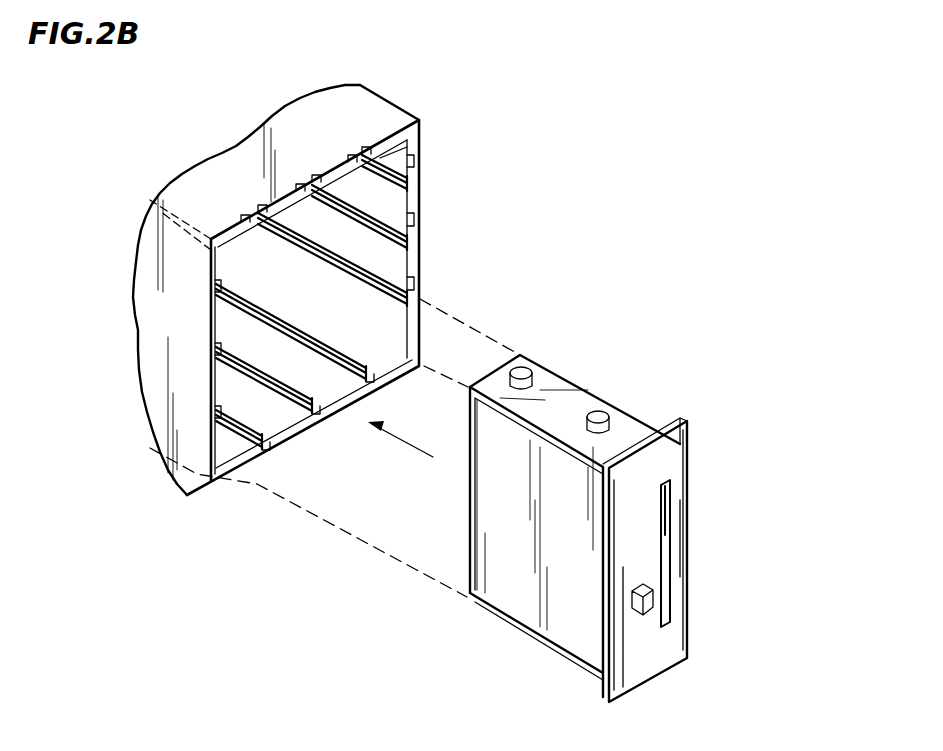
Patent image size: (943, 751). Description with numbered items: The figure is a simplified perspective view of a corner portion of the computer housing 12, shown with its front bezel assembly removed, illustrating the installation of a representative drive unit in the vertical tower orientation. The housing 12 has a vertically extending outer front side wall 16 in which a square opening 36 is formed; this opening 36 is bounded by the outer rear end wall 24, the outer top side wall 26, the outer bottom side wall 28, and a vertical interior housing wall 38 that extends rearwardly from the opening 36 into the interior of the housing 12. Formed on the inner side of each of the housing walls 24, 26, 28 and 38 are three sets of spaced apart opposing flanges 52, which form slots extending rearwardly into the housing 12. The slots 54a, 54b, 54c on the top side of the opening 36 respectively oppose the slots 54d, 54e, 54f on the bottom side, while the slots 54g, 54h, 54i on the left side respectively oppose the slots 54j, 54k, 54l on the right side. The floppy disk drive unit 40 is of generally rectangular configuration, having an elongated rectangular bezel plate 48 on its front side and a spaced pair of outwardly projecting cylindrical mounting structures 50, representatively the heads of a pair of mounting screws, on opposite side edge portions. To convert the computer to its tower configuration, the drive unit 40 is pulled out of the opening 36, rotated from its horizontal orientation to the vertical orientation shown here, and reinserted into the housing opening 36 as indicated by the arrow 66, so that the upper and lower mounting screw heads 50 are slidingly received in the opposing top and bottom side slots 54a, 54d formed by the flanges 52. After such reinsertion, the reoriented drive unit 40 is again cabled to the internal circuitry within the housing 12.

The housing 12 is at (316, 276).
The outer front side wall 16 is at (150, 402).
The outer rear end wall 24 is at (420, 203).
The outer top side wall 26 is at (308, 103).
The outer bottom side wall 28 is at (388, 380).
The square opening 36 is at (372, 258).
The vertical interior housing wall 38 is at (178, 208).
The floppy disk drive unit 40 is at (606, 517).
The bezel plate 48 is at (668, 450).
The cylindrical mounting structures 50 is at (528, 373).
The opposing flanges 52 is at (314, 190).
The slot 54a is at (248, 216).
The slot 54b is at (302, 186).
The slot 54c is at (367, 152).
The slot 54d is at (258, 454).
The slot 54e is at (312, 418).
The slot 54f is at (364, 388).
The slot 54g is at (213, 287).
The slot 54h is at (213, 350).
The slot 54i is at (210, 427).
The slot 54j is at (413, 168).
The slot 54k is at (417, 234).
The slot 54l is at (413, 300).
The arrow 66 is at (407, 440).